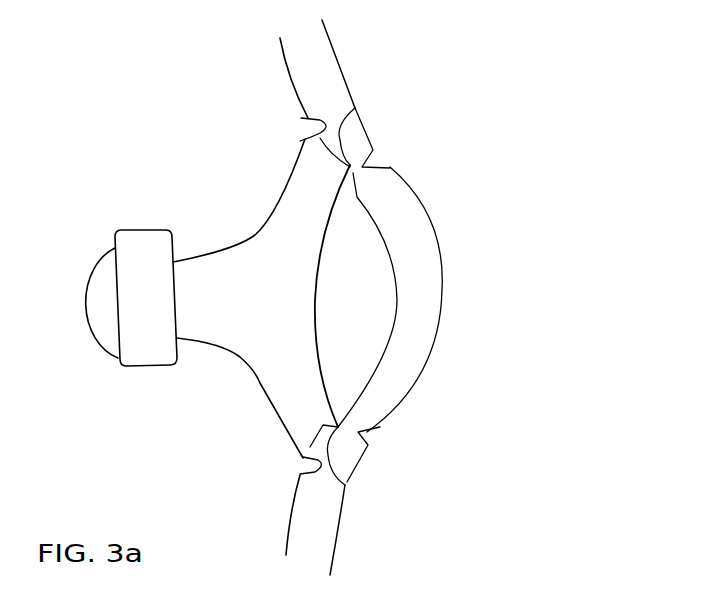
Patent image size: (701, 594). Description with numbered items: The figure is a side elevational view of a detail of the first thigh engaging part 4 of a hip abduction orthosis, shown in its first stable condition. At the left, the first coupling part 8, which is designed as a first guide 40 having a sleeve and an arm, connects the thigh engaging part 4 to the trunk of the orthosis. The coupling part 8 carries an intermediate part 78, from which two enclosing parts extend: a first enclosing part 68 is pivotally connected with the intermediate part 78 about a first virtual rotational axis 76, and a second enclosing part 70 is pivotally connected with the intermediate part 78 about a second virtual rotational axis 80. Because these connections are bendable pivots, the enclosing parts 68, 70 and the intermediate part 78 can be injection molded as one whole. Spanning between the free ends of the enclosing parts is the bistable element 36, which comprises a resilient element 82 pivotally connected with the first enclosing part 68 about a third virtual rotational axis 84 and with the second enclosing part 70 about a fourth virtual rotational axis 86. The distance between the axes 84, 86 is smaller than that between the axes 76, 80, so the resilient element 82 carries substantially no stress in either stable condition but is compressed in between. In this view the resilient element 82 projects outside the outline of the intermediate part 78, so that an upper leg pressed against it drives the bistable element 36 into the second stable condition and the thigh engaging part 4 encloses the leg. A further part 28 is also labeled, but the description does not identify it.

The first thigh engaging part 4 is at (122, 172).
The first coupling part 8 is at (148, 368).
The lower arm 28 is at (238, 357).
The bistable element 36 is at (466, 287).
The first guide 40 is at (120, 367).
The first enclosing part 68 is at (285, 517).
The second enclosing part 70 is at (282, 68).
The first rotational axis 76 is at (322, 462).
The intermediate part 78 is at (283, 185).
The second rotational axis 80 is at (330, 128).
The resilient element 82 is at (415, 200).
The third rotational axis 84 is at (362, 431).
The fourth rotational axis 86 is at (365, 166).